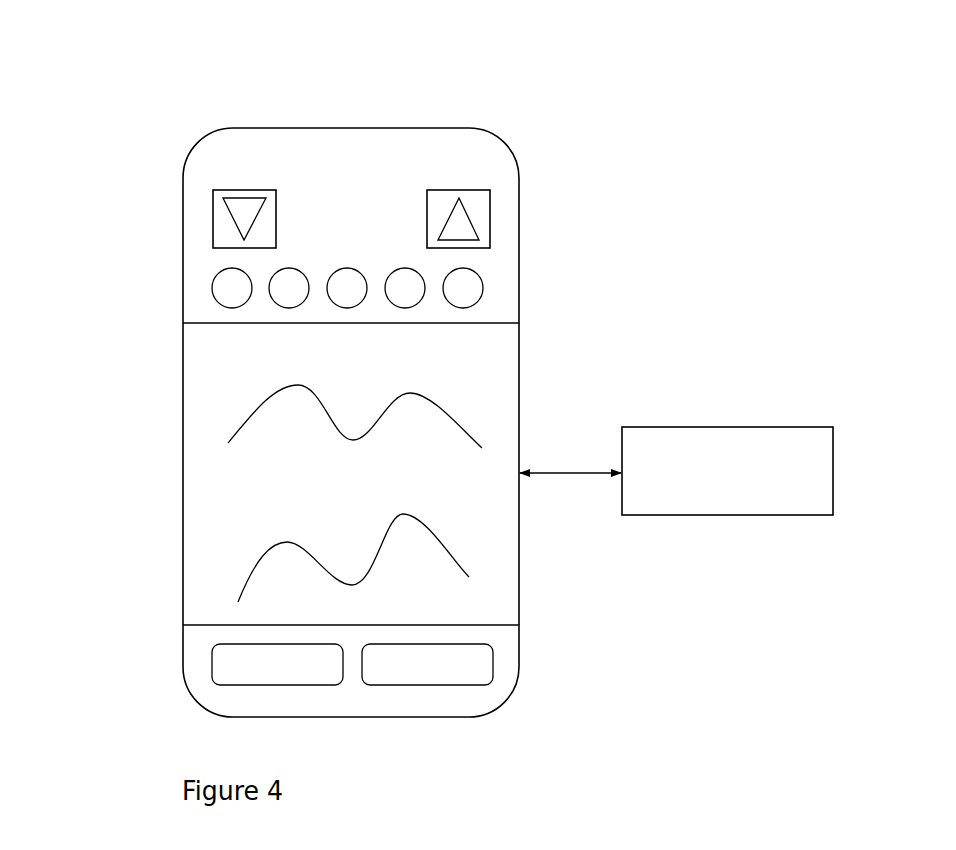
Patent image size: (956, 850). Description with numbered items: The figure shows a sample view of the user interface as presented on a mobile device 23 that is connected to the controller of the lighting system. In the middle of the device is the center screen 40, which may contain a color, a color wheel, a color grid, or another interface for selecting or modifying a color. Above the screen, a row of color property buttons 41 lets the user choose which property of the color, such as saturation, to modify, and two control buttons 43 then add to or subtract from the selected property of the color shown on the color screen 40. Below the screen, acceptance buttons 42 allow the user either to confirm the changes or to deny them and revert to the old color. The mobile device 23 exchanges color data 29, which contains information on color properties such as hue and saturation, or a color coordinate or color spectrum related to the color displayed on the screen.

The mobile device 23 is at (445, 104).
The control buttons 43 is at (250, 188).
The color property buttons 41 is at (458, 266).
The center screen 40 is at (211, 464).
The acceptance buttons 42 is at (424, 686).
The color data 29 is at (676, 471).